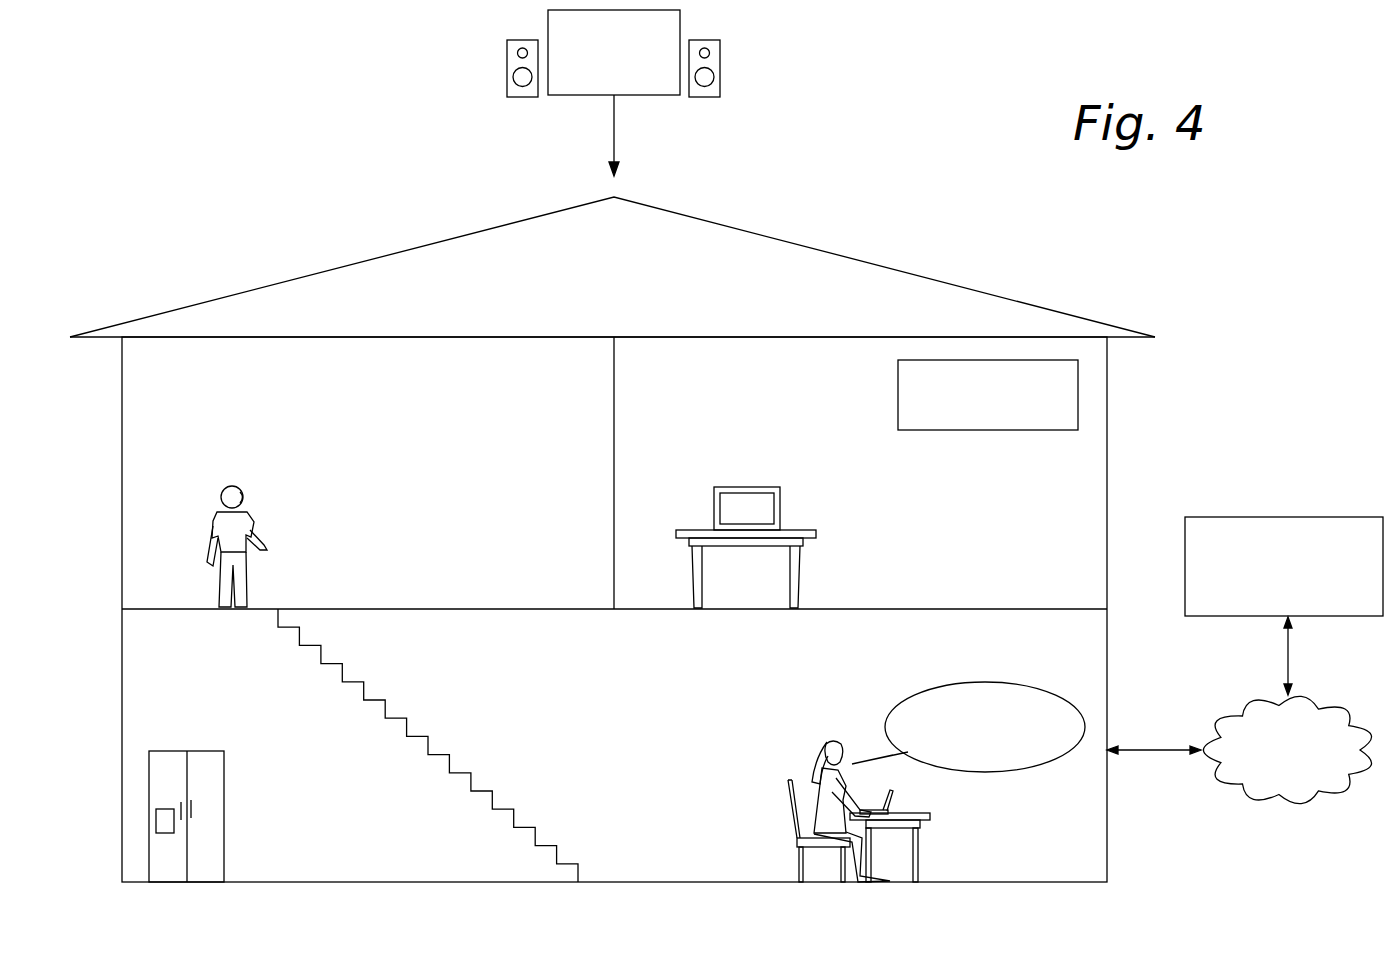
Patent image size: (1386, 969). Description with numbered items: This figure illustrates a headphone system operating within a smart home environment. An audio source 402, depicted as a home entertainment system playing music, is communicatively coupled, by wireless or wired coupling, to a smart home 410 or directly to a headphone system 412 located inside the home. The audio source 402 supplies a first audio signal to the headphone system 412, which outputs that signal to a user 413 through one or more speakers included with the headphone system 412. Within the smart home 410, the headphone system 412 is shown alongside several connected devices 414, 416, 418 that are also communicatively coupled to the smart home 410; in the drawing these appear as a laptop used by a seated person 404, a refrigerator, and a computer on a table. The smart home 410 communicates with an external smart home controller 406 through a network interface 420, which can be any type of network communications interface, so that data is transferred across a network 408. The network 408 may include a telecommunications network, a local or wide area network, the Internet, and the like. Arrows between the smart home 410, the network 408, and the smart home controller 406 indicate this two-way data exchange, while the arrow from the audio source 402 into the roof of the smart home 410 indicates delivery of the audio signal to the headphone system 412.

The audio source 402 is at (580, 95).
The first user 404 is at (822, 742).
The smart home controller 406 is at (1290, 516).
The network 408 is at (1290, 806).
The smart home 410 is at (348, 242).
The headphone system 412 is at (242, 497).
The user 413 is at (214, 521).
The device 414 is at (893, 805).
The device 416 is at (224, 781).
The device 418 is at (745, 486).
The network interface 420 is at (898, 411).